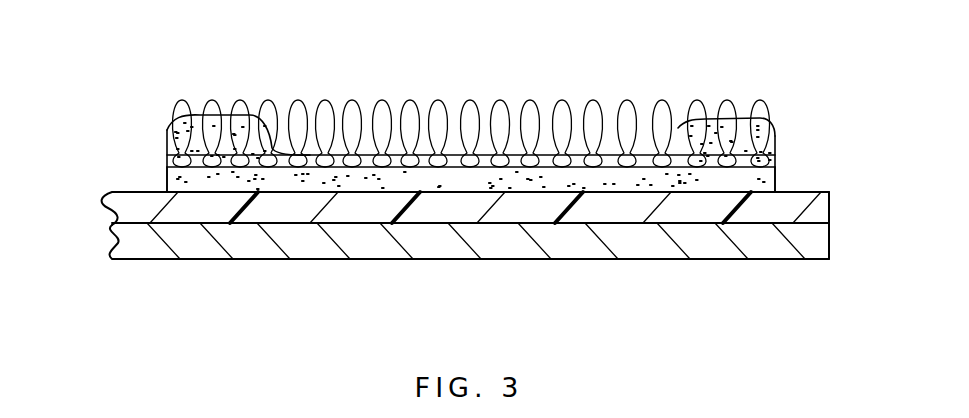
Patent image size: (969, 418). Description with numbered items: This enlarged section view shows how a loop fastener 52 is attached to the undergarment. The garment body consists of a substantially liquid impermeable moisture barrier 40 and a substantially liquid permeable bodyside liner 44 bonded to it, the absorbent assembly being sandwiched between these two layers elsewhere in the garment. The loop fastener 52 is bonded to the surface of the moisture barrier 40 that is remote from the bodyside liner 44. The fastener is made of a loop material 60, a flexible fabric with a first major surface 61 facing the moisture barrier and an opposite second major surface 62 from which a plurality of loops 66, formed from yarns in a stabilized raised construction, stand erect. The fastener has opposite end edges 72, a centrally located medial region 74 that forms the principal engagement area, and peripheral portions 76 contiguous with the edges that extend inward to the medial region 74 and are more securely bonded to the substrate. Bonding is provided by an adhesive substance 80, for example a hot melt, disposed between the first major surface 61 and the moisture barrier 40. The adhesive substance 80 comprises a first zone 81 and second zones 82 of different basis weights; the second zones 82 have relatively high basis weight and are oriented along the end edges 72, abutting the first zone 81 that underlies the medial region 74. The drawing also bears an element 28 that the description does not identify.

The substrate 28 is at (830, 225).
The moisture barrier 40 is at (104, 199).
The bodyside liner 44 is at (108, 248).
The loop fastener 52 is at (347, 72).
The loop material 60 is at (437, 100).
The first major surface 61 is at (265, 167).
The second major surface 62 is at (380, 100).
The loops 66 is at (552, 105).
The end edges 72 is at (167, 115).
The medial region 74 is at (620, 100).
The peripheral portions 76 is at (215, 100).
The adhesive substance 80 is at (378, 177).
The first zone 81 is at (533, 177).
The second zone 82 is at (167, 180).